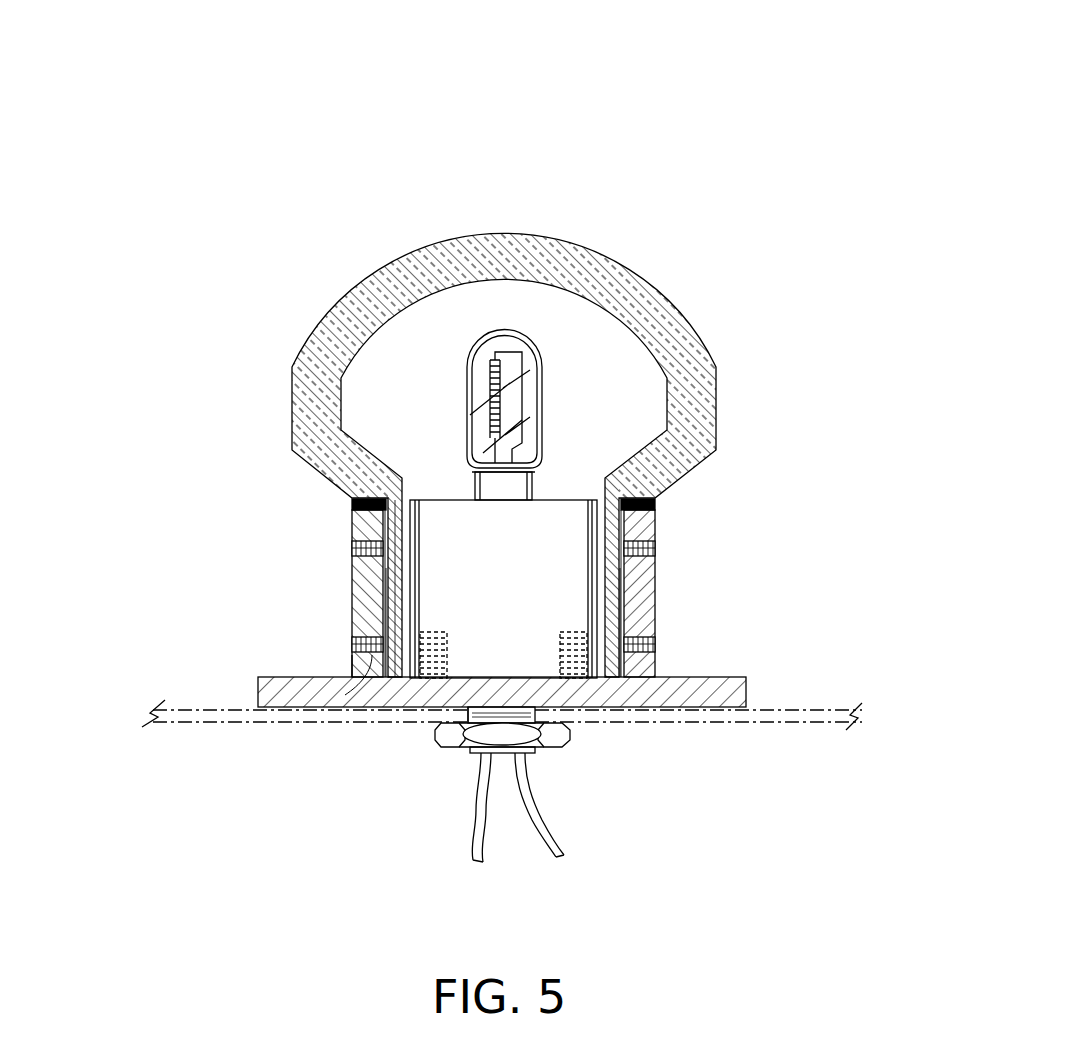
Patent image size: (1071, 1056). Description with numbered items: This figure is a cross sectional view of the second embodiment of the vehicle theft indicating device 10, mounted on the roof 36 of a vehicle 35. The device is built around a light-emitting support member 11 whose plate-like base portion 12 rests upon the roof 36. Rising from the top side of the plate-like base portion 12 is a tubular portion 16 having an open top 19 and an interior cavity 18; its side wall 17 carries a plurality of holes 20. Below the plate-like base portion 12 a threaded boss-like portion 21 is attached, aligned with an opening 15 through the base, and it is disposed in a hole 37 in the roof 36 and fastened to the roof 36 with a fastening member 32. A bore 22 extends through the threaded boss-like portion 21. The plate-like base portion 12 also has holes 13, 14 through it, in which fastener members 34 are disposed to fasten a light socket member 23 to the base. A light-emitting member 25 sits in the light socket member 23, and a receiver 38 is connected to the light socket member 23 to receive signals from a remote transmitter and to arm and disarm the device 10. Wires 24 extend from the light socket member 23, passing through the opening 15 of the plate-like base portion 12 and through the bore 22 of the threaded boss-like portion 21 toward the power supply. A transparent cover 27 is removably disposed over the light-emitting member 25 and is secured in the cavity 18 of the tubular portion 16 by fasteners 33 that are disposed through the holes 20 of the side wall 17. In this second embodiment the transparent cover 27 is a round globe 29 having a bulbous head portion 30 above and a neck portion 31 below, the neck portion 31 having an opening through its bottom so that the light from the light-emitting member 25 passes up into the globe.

The vehicle theft indicating device 10 is at (762, 104).
The light-emitting support member 11 is at (353, 665).
The plate-like base portion 12 is at (277, 698).
The hole 13 is at (452, 692).
The hole 14 is at (607, 697).
The opening 15 is at (515, 690).
The tubular portion 16 is at (655, 502).
The side wall 17 is at (363, 585).
The cavity 18 is at (660, 445).
The open top 19 is at (405, 468).
The holes 20 is at (357, 537).
The threaded boss-like portion 21 is at (547, 715).
The bore 22 is at (498, 762).
The light socket member 23 is at (567, 512).
The wires 24 is at (480, 828).
The light-emitting member 25 is at (523, 338).
The transparent cover 27 is at (477, 250).
The round globe 29 is at (637, 283).
The bulbous head portion 30 is at (325, 327).
The neck portion 31 is at (397, 617).
The fastening member 32 is at (557, 738).
The fasteners 33 is at (652, 640).
The fastener members 34 is at (655, 596).
The vehicle 35 is at (858, 712).
The roof 36 is at (180, 710).
The hole 37 is at (470, 710).
The receiver 38 is at (453, 513).